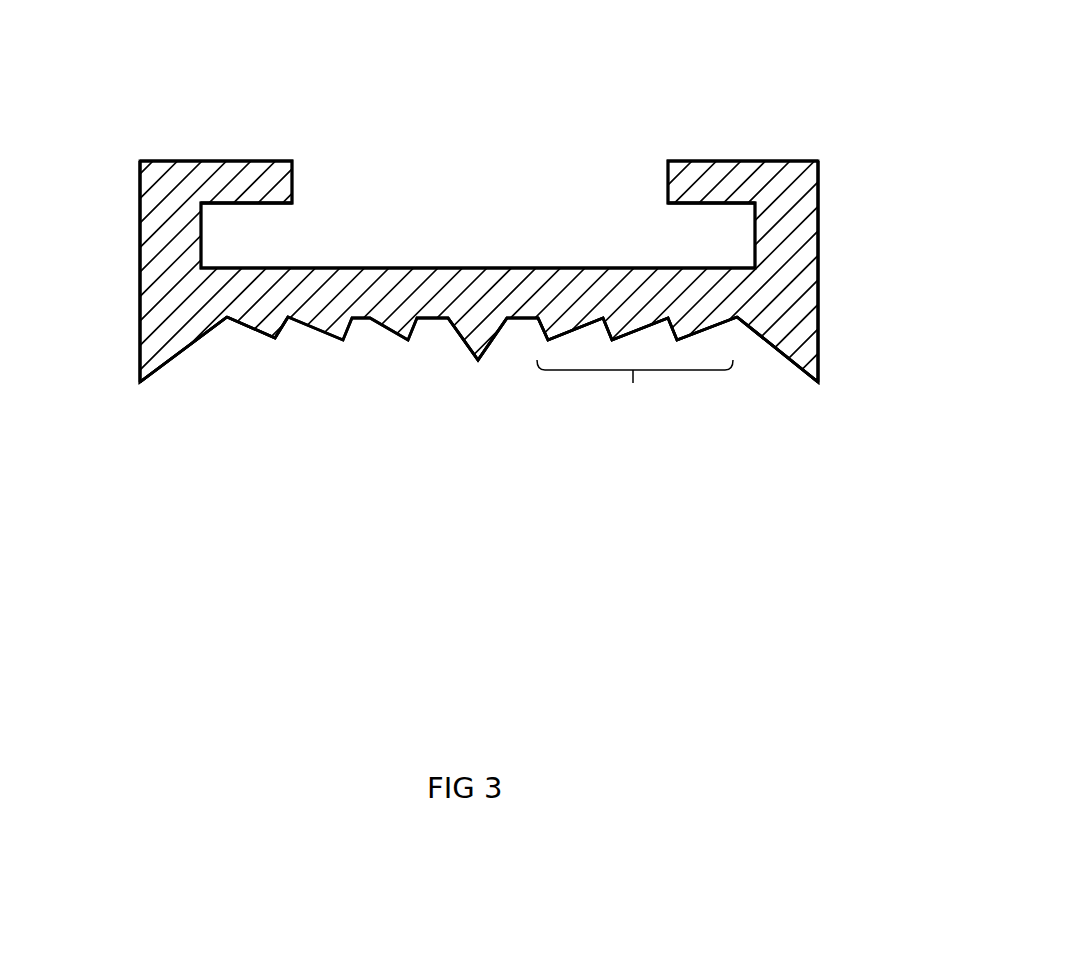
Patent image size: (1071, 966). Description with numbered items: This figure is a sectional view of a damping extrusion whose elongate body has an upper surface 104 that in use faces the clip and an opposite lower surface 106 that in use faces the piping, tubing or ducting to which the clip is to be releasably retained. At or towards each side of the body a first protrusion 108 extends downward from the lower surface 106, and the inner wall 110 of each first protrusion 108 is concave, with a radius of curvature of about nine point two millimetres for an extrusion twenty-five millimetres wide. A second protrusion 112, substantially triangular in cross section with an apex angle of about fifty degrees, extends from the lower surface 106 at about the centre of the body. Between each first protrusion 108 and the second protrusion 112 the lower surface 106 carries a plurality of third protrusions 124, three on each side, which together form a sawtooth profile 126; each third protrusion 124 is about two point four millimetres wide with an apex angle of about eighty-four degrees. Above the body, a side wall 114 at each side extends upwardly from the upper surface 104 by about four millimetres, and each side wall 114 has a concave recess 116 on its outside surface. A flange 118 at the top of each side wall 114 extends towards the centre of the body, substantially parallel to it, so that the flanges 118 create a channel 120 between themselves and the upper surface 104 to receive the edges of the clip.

The upper surface 104 is at (487, 266).
The lower surface 106 is at (563, 420).
The first protrusion 108 is at (151, 349).
The inner wall 110 is at (175, 361).
The second protrusion 112 is at (478, 365).
The side wall 114 is at (137, 268).
The concave recess 116 is at (137, 212).
The flange 118 is at (266, 180).
The channel 120 is at (278, 241).
The third protrusion 124 is at (278, 331).
The sawtooth profile 126 is at (637, 371).